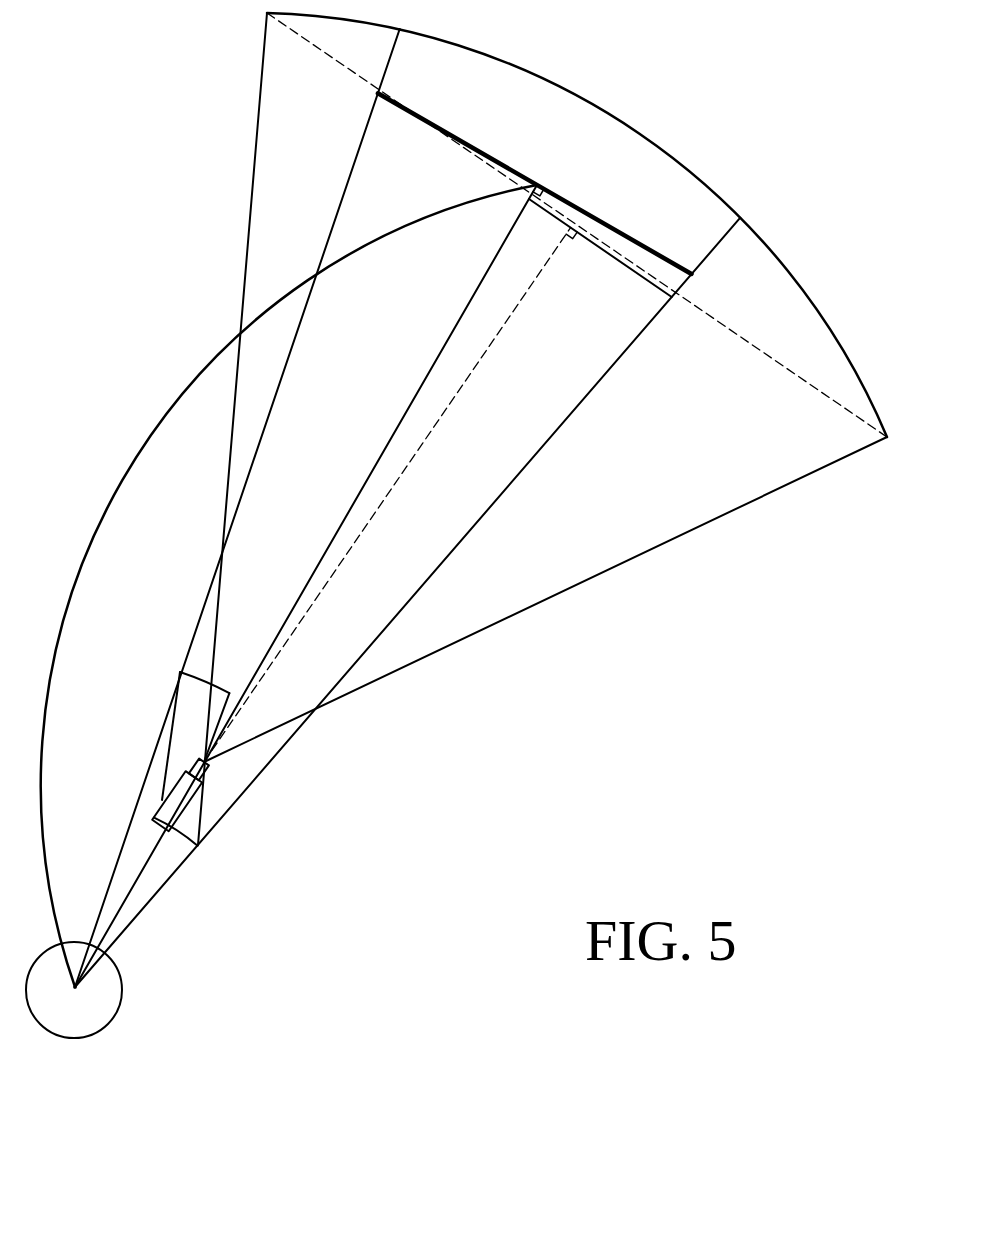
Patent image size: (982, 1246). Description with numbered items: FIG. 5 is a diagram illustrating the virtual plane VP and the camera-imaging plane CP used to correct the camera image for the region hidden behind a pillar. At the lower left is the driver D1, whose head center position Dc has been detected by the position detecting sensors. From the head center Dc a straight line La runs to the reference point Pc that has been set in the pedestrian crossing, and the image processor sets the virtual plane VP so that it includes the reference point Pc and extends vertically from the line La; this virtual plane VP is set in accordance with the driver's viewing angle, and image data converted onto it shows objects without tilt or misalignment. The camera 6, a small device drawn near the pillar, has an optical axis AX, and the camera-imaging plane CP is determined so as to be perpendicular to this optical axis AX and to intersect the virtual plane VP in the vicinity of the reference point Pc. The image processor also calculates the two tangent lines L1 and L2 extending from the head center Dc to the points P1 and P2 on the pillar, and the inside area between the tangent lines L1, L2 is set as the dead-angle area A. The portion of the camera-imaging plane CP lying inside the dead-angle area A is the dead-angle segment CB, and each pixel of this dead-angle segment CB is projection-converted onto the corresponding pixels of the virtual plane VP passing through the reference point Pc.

The detector (D) D1 is at (123, 990).
The center position of the head Dc is at (75, 990).
The tangent line L1 is at (160, 730).
The tangent line L2 is at (268, 765).
The straight line La is at (440, 345).
The optical axis AX is at (388, 495).
The virtual plane VP is at (612, 214).
The reference point Pc is at (541, 182).
The dead-angle segment CB is at (605, 255).
The camera-imaging plane CP is at (757, 350).
The dead-angle area A is at (542, 429).
The point on the pillar P1 is at (177, 667).
The point on the pillar P2 is at (203, 848).
The camera 6 is at (166, 782).